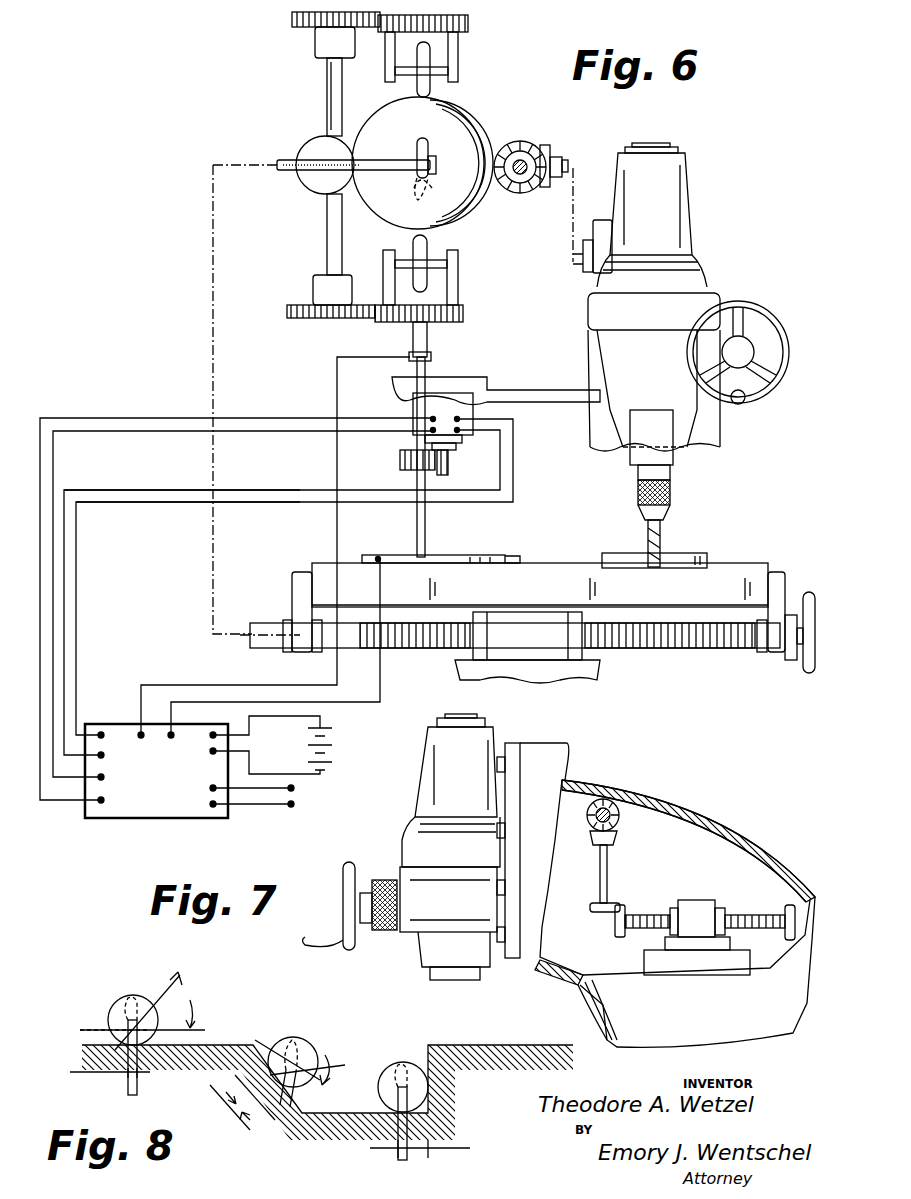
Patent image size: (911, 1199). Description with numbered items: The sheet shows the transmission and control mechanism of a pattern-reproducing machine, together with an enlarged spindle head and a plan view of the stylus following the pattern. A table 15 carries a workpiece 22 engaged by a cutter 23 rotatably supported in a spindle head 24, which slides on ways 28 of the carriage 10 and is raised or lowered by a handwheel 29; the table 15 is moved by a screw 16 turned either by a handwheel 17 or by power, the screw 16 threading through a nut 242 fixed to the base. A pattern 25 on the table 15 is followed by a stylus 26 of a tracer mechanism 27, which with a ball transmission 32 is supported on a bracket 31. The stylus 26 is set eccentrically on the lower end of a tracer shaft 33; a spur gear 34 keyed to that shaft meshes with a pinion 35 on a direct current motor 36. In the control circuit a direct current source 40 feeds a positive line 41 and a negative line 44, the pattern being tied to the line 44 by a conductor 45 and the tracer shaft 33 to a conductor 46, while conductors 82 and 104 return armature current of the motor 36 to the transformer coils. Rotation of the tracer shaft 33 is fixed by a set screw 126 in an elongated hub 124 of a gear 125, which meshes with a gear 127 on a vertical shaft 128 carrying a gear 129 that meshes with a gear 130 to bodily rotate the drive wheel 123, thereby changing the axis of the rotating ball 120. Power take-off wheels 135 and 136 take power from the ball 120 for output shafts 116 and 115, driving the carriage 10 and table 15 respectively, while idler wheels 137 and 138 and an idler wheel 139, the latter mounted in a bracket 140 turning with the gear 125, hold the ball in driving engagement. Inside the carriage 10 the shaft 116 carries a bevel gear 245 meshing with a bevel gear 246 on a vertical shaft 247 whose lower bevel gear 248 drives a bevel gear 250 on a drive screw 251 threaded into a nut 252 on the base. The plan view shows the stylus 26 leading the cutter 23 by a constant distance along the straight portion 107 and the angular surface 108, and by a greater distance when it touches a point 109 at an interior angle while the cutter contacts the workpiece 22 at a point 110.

In FIG. 7, the carriage 10 is at (590, 996).
In FIG. 6, the table 15 is at (735, 587).
In FIG. 6, the screw 16 is at (705, 648).
In FIG. 6, the handwheel 17 is at (800, 666).
In FIG. 6, the workpiece 22 is at (690, 556).
In FIG. 6, the cutter 23 is at (662, 538).
In FIG. 6, the spindle head 24 is at (720, 224).
In FIG. 7, the spindle head 24 is at (400, 802).
In FIG. 6, the pattern 25 is at (438, 560).
In FIG. 6, the stylus 26 is at (410, 555).
In FIG. 8, the stylus 26 is at (133, 995).
In FIG. 6, the tracer mechanism 27 is at (386, 489).
In FIG. 7, the ways 28 is at (525, 765).
In FIG. 6, the handwheel 29 is at (762, 397).
In FIG. 7, the handwheel 29 is at (352, 872).
In FIG. 6, the bracket 31 is at (505, 378).
In FIG. 6, the ball transmission 32 is at (276, 146).
In FIG. 6, the tracer shaft 33 is at (425, 512).
In FIG. 8, the tracer shaft 33 is at (110, 1033).
In FIG. 6, the spur gear 34 is at (400, 460).
In FIG. 6, the pinion 35 is at (448, 462).
In FIG. 6, the direct current motor 36 is at (470, 406).
In FIG. 6, the direct current source 40 is at (333, 755).
In FIG. 6, the line 41 is at (135, 490).
In FIG. 6, the line 44 is at (103, 502).
In FIG. 6, the conductor 45 is at (338, 702).
In FIG. 6, the conductor 46 is at (290, 685).
In FIG. 6, the conductor 82 is at (97, 418).
In FIG. 6, the conductor 104 is at (95, 431).
In FIG. 8, the straight line portion 107 is at (187, 1048).
In FIG. 8, the angular surface 108 is at (276, 1135).
In FIG. 8, the point 109 is at (428, 1086).
In FIG. 8, the point 110 is at (390, 1115).
In FIG. 6, the output shaft 115 is at (290, 171).
In FIG. 6, the output shaft 116 is at (568, 165).
In FIG. 6, the ball 120 is at (450, 120).
In FIG. 6, the drive wheel 123 is at (430, 90).
In FIG. 6, the elongated hub 124 is at (428, 339).
In FIG. 6, the gear 125 is at (463, 313).
In FIG. 6, the set screw 126 is at (409, 356).
In FIG. 6, the gear 127 is at (293, 318).
In FIG. 6, the vertical shaft 128 is at (327, 69).
In FIG. 6, the gear 129 is at (292, 19).
In FIG. 6, the gear 130 is at (468, 23).
In FIG. 6, the power take-off wheel 135 is at (531, 146).
In FIG. 6, the power take-off wheel 136 is at (420, 148).
In FIG. 6, the idler wheel 137 is at (318, 143).
In FIG. 6, the idler wheel 138 is at (414, 180).
In FIG. 6, the idler wheel 139 is at (413, 246).
In FIG. 6, the bracket 140 is at (452, 283).
In FIG. 6, the nut 242 is at (560, 648).
In FIG. 7, the bevel gear 245 is at (620, 819).
In FIG. 7, the bevel gear 246 is at (615, 839).
In FIG. 7, the vertical shaft 247 is at (607, 865).
In FIG. 7, the bevel gear 248 is at (603, 912).
In FIG. 7, the bevel gear 250 is at (615, 928).
In FIG. 7, the drive screw 251 is at (640, 918).
In FIG. 7, the nut 252 is at (700, 906).